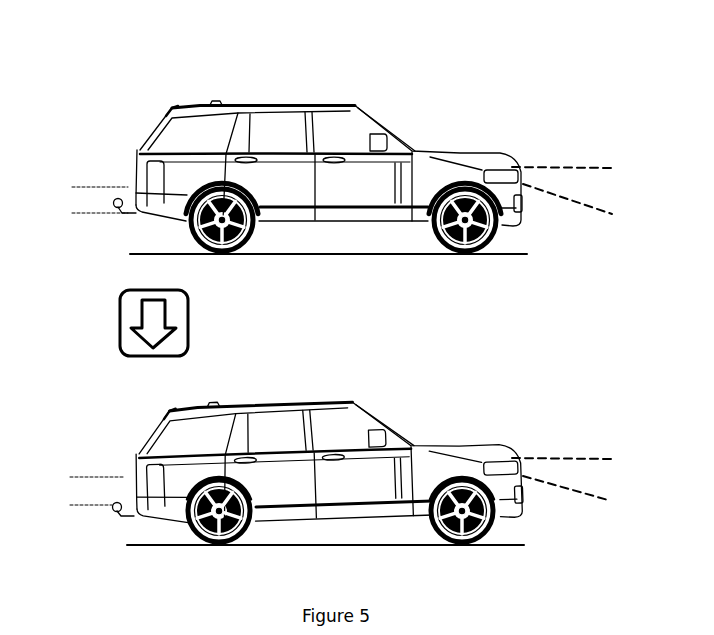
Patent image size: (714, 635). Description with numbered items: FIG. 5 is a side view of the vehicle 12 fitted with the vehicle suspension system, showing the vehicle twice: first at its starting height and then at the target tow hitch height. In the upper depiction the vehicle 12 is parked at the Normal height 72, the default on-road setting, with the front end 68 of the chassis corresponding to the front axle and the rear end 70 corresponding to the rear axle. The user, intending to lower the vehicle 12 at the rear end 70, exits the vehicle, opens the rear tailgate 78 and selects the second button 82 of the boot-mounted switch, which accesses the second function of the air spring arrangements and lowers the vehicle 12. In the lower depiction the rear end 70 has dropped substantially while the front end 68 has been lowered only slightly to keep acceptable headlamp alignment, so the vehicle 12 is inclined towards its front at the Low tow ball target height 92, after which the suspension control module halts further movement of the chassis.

The vehicle 12 is at (478, 42).
The rear end 70 is at (208, 82).
The rear tailgate 78 is at (157, 121).
The front end 68 is at (462, 140).
The Normal 72 is at (582, 95).
The second button 82 is at (190, 312).
The Low tow ball target height 92 is at (78, 508).